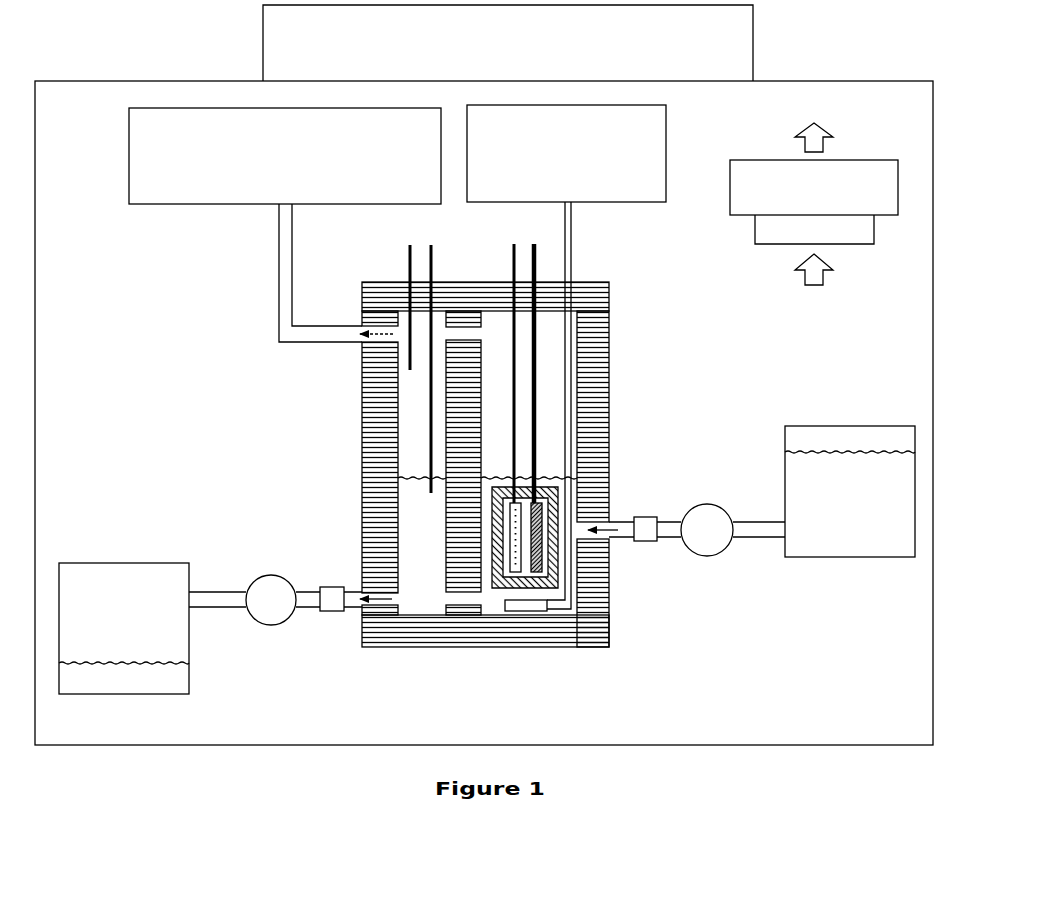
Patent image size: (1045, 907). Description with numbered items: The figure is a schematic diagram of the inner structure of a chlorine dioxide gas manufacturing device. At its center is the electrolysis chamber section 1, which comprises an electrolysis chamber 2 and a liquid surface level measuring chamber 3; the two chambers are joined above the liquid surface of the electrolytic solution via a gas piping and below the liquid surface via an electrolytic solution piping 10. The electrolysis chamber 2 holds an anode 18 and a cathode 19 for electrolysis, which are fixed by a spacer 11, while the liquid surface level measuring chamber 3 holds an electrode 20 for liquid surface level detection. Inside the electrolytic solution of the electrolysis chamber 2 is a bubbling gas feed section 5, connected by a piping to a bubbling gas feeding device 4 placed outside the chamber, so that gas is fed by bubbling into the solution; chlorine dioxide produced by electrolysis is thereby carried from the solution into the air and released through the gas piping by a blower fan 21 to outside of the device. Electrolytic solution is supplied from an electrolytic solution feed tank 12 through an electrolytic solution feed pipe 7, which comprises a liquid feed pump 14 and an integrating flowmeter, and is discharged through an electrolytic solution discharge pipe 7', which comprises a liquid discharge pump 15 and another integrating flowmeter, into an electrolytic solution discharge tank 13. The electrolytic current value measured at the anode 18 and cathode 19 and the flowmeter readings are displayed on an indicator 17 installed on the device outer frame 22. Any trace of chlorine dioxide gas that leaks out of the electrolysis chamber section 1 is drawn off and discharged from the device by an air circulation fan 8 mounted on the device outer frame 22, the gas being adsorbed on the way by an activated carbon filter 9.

The electrolysis chamber section 1 is at (590, 632).
The electrolysis chamber 2 is at (495, 601).
The liquid surface level measuring chamber 3 is at (417, 601).
The bubbling gas feeding device 4 is at (565, 195).
The bubbling gas feed section 5 is at (528, 607).
The electrolytic solution feed pipe 7 is at (686, 505).
The electrolytic solution discharge pipe 7' is at (290, 569).
The air circulation fan 8 is at (822, 270).
The activated carbon filter 9 is at (814, 156).
The electrolytic solution piping 10 is at (466, 597).
The spacer 11 is at (555, 562).
The electrolytic solution feed tank 12 is at (803, 491).
The electrolytic solution discharge tank 13 is at (171, 628).
The liquid feed pump 14 is at (707, 530).
The liquid discharge pump 15 is at (271, 600).
The indicator 17 is at (508, 43).
The anode 18 is at (503, 408).
The cathode 19 is at (545, 408).
The electrode for liquid surface level detection 20 is at (418, 357).
The blower fan 21 is at (285, 156).
The device outer frame 22 is at (803, 746).